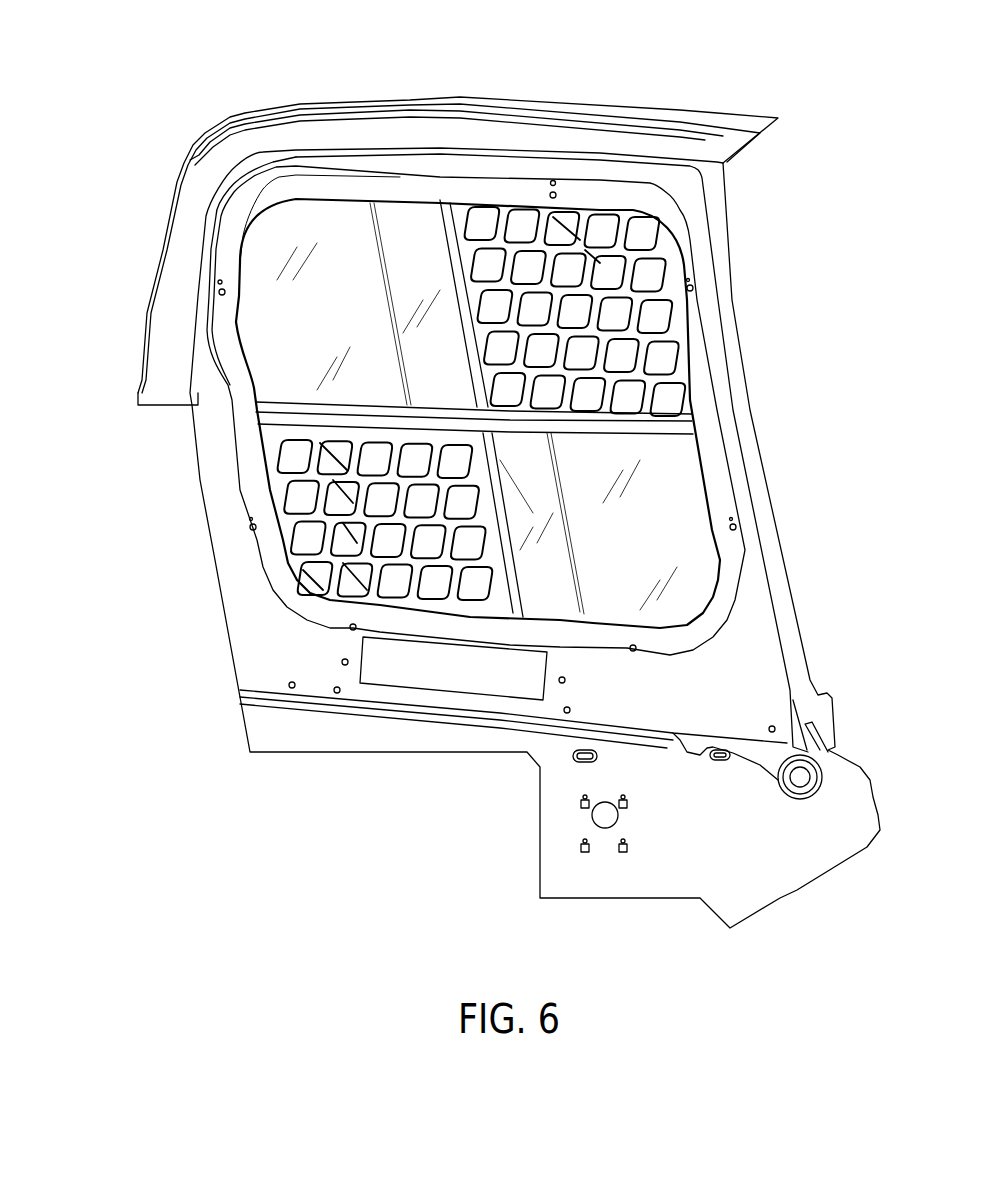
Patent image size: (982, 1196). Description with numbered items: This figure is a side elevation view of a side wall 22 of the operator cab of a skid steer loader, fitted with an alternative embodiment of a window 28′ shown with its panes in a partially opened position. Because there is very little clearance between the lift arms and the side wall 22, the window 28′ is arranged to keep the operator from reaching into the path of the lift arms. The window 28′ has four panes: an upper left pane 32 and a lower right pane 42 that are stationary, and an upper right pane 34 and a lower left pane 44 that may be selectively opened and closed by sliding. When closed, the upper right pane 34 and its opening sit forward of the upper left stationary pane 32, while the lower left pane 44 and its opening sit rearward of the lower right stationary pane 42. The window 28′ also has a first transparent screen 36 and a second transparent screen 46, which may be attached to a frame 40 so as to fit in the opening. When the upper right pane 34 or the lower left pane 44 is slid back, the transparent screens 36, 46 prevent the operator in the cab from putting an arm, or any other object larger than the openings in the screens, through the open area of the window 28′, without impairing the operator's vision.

The side wall 22 is at (757, 82).
The window 28′ is at (693, 335).
The upper left pane 32 is at (328, 322).
The upper right pane 34 is at (373, 205).
The first transparent screen 36 is at (620, 210).
The frame 40 is at (727, 560).
The lower right pane 42 is at (651, 541).
The lower left pane 44 is at (580, 612).
The second transparent screen 46 is at (287, 502).